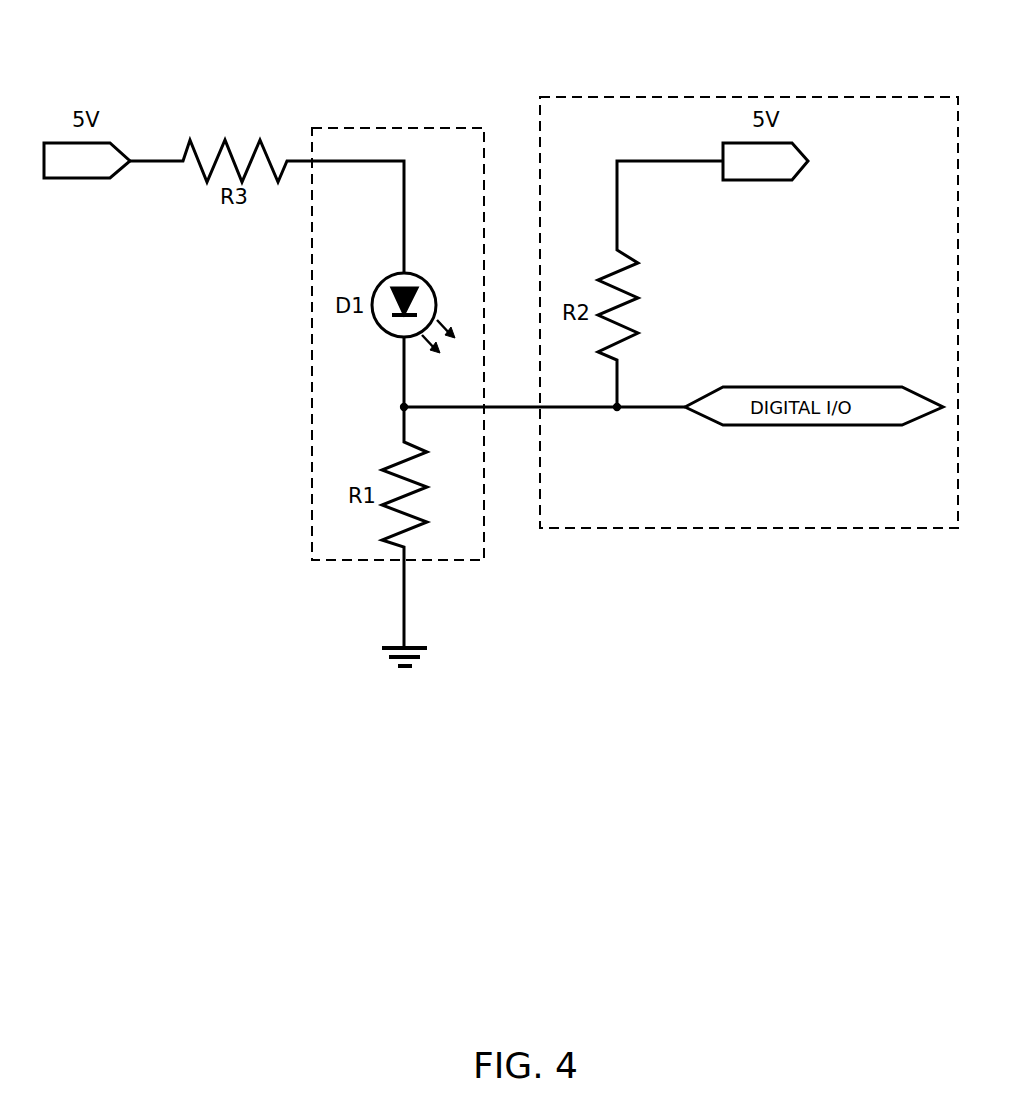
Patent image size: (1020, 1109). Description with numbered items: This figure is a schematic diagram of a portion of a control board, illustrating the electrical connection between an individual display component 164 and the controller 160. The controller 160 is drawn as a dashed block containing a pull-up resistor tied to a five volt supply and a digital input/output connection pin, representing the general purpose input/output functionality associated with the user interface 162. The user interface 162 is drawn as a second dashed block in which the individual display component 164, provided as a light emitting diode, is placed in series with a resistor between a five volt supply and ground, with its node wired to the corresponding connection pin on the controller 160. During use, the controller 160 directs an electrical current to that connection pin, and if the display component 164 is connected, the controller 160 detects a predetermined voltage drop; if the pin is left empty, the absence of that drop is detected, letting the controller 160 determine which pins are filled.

The controller 160 is at (712, 96).
The user interface 162 is at (371, 124).
The display component 164 is at (350, 333).